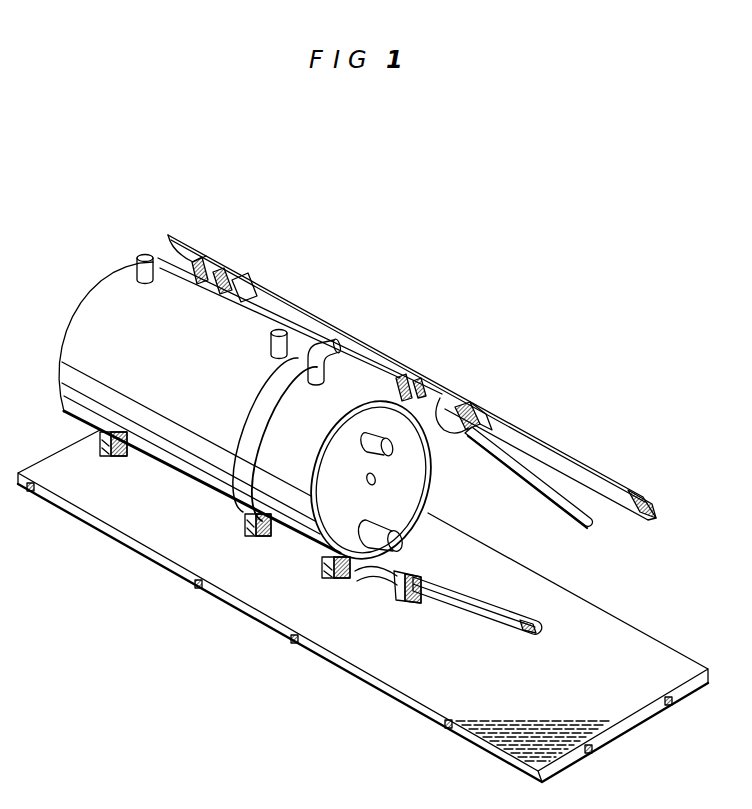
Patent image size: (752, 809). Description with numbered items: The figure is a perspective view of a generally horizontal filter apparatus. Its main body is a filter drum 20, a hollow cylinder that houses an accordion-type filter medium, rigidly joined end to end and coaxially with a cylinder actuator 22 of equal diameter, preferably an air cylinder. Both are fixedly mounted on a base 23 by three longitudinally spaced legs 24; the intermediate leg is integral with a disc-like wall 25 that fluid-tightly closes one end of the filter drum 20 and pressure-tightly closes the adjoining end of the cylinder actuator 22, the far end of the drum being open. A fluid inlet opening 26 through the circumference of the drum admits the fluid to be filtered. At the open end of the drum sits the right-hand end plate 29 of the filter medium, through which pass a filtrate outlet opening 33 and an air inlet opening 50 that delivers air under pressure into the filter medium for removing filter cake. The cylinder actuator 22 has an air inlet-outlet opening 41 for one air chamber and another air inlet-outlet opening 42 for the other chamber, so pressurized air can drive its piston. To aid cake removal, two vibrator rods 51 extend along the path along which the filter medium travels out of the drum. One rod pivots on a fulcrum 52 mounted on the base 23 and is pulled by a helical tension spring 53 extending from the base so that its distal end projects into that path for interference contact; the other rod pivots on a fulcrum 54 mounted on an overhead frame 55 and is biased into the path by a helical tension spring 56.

The filter drum 20 is at (235, 472).
The cylinder actuator 22 is at (115, 538).
The base 23 is at (482, 705).
The legs 24 is at (63, 503).
The disc-like wall 25 is at (175, 443).
The fluid inlet opening 26 is at (331, 342).
The right-hand end plate 29 is at (287, 527).
The filtrate outlet opening 33 is at (410, 524).
The air inlet-outlet opening 41 is at (145, 252).
The air inlet-outlet opening 42 is at (283, 330).
The air inlet opening 50 is at (386, 432).
The vibrator rods 51 is at (592, 530).
The fulcrum 52 is at (405, 605).
The helical tension spring 53 is at (378, 584).
The fulcrum 54 is at (484, 414).
The overhead frame 55 is at (592, 480).
The helical tension spring 56 is at (452, 408).